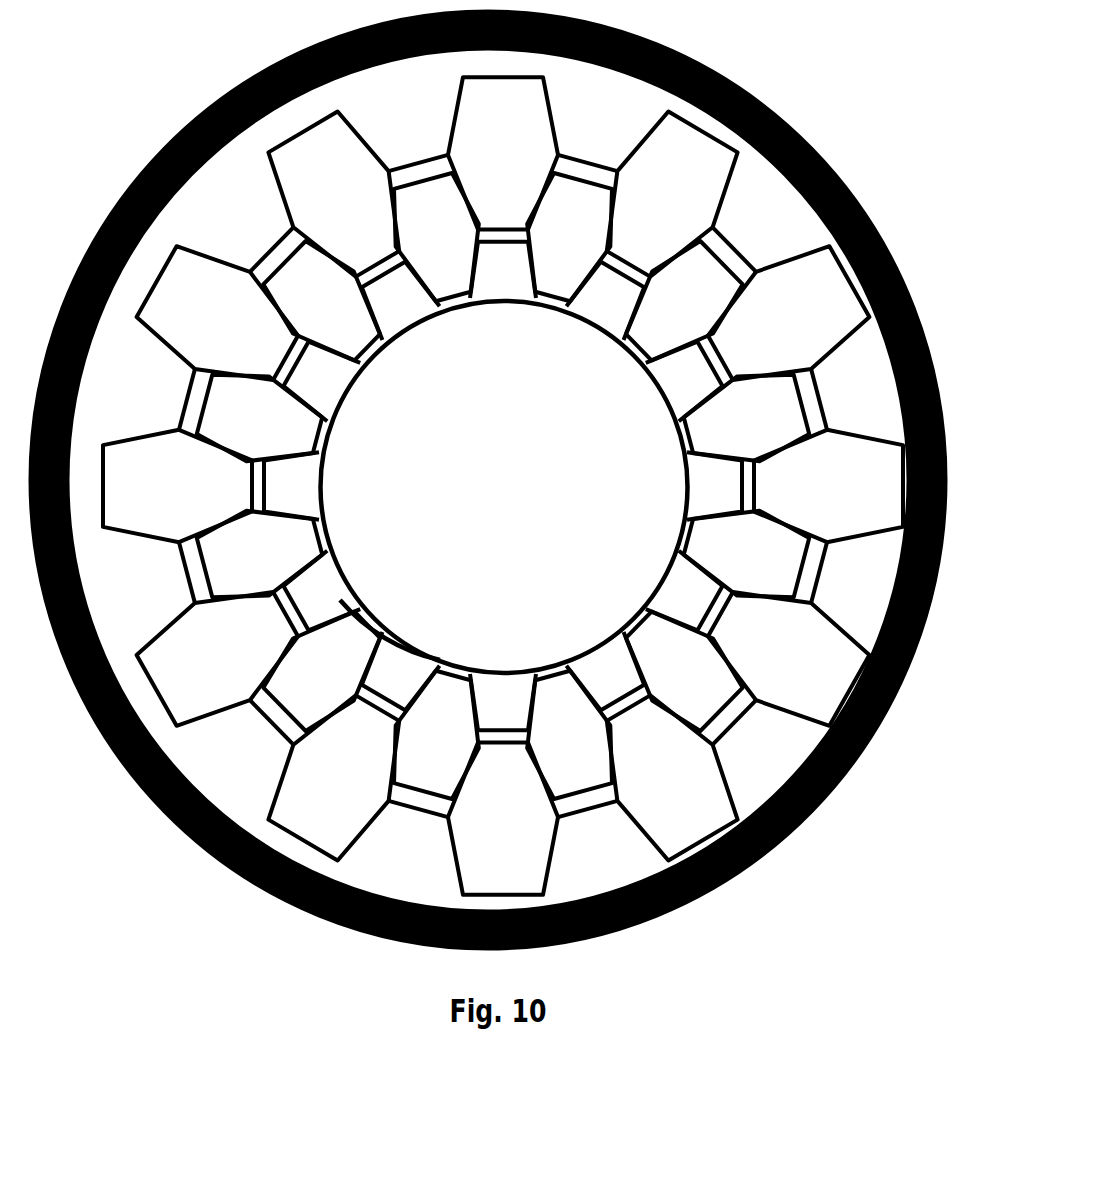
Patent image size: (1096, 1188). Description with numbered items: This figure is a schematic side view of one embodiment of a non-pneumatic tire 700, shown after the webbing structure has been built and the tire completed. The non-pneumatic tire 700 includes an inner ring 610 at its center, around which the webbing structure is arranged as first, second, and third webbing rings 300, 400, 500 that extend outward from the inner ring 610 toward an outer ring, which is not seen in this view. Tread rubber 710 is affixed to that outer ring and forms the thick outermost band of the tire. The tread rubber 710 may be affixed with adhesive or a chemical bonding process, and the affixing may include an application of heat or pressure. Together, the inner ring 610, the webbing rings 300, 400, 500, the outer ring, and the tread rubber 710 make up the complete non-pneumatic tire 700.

The non-pneumatic tire 700 is at (488, 469).
The tread rubber 710 is at (748, 92).
The third webbing ring 500 is at (479, 456).
The second webbing ring 400 is at (236, 348).
The first webbing ring 300 is at (672, 572).
The inner ring 610 is at (394, 630).